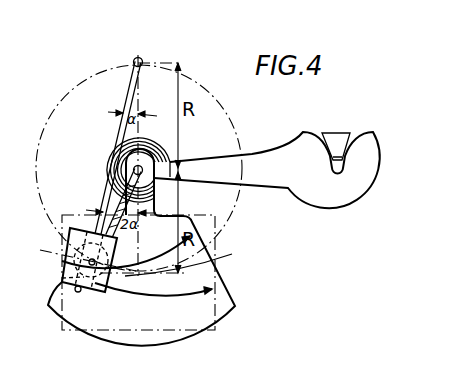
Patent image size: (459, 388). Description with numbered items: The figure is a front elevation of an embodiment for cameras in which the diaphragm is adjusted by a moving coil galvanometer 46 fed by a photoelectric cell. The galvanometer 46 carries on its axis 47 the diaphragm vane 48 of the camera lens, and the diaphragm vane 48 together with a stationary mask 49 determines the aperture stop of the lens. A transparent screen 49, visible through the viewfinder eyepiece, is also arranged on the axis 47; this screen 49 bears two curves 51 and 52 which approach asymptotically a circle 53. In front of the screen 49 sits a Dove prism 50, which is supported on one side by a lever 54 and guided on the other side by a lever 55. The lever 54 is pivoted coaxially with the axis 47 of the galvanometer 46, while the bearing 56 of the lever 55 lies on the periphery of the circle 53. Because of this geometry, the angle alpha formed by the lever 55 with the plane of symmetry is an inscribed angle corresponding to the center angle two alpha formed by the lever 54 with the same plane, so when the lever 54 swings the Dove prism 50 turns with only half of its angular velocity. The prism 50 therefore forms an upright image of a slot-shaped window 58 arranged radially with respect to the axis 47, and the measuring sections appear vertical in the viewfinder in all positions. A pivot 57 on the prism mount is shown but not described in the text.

The galvanometer 46 is at (118, 146).
The axis 47 is at (133, 169).
The diaphragm vane 48 is at (368, 156).
The transparent screen 49 is at (337, 141).
The Dove prism 50 is at (69, 262).
The curve 51 is at (198, 231).
The curve 52 is at (214, 289).
The circle 53 is at (192, 260).
The lever 54 is at (112, 221).
The lever 55 is at (127, 96).
The bearing 56 is at (134, 59).
The block pivot 57 is at (76, 244).
The slot-shaped window 58 is at (62, 278).